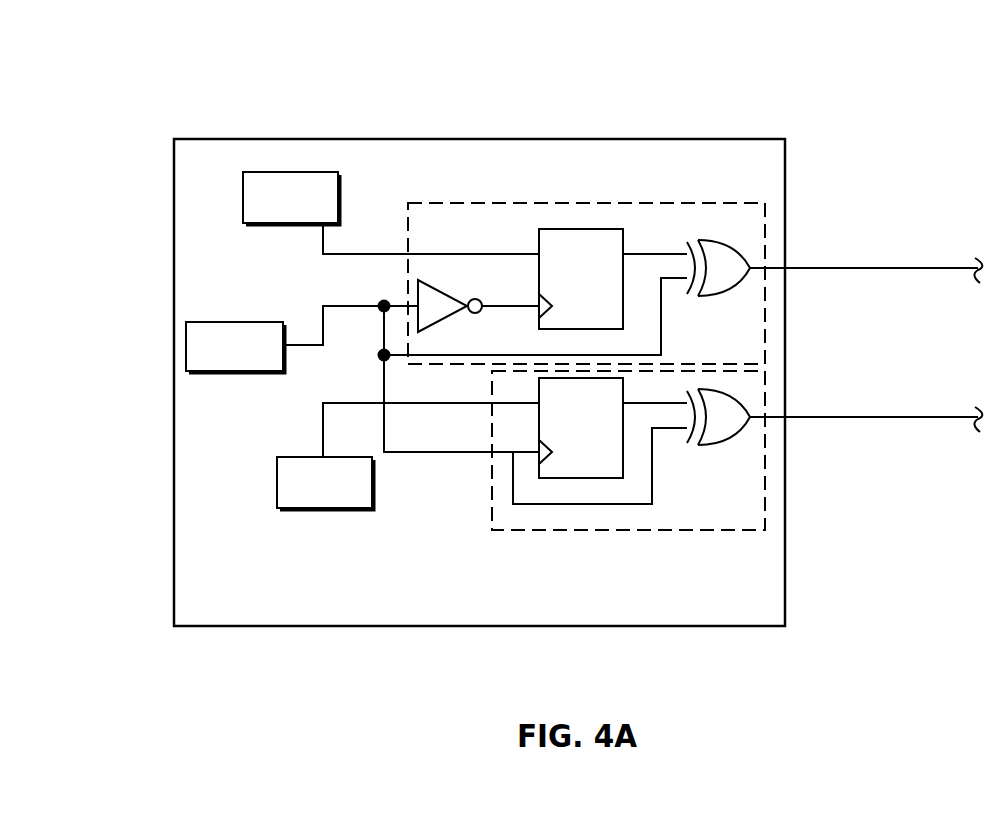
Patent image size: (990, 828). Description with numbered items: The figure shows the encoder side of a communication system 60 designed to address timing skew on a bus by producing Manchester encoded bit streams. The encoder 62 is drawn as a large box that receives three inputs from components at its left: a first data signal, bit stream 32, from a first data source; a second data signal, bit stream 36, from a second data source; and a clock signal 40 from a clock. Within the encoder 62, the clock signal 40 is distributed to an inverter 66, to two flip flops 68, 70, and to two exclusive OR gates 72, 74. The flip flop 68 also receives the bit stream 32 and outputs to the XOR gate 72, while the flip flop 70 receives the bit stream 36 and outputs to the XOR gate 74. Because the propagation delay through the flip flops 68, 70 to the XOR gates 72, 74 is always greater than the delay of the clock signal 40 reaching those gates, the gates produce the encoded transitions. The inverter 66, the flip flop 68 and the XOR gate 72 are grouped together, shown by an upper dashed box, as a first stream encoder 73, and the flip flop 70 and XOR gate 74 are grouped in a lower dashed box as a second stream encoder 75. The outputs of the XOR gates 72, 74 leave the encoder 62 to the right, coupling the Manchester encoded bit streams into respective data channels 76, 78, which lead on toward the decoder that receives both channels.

The communication system 60 is at (843, 100).
The encoder 62 is at (536, 102).
The bit stream 32 is at (442, 256).
The bit stream 36 is at (442, 405).
The clock signal 40 is at (363, 325).
The inverter 66 is at (450, 293).
The flip flop 68 is at (623, 237).
The flip flop 70 is at (623, 462).
The exclusive OR (XOR) gate 72 is at (729, 248).
The first stream encoder 73 is at (585, 200).
The exclusive OR (XOR) gate 74 is at (733, 380).
The second stream encoder 75 is at (628, 532).
The data channel 76 is at (868, 268).
The data channel 78 is at (875, 418).